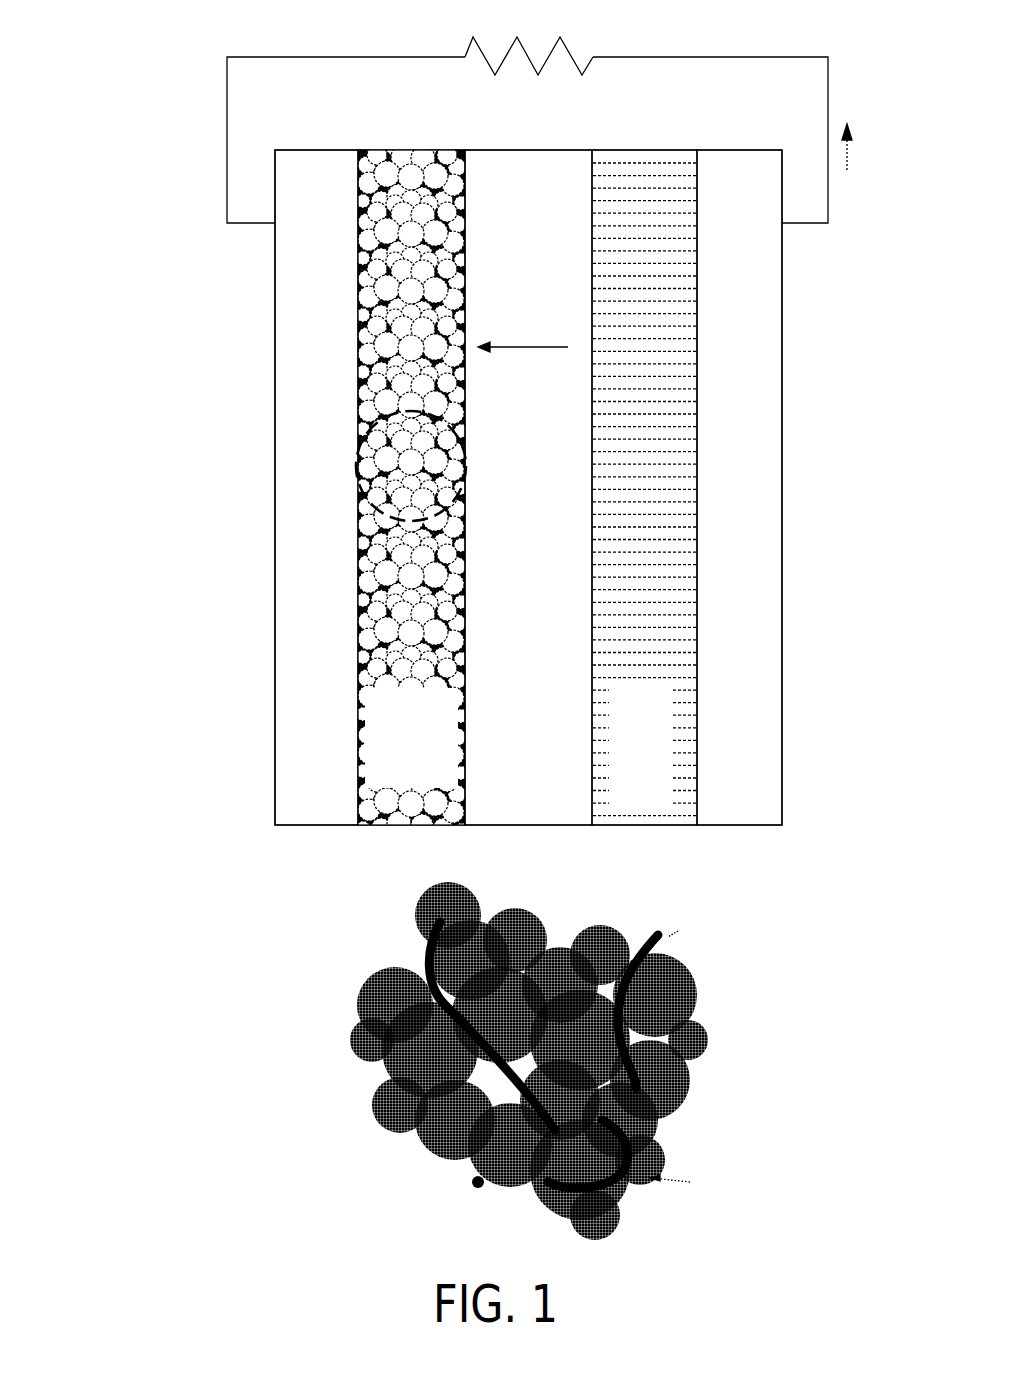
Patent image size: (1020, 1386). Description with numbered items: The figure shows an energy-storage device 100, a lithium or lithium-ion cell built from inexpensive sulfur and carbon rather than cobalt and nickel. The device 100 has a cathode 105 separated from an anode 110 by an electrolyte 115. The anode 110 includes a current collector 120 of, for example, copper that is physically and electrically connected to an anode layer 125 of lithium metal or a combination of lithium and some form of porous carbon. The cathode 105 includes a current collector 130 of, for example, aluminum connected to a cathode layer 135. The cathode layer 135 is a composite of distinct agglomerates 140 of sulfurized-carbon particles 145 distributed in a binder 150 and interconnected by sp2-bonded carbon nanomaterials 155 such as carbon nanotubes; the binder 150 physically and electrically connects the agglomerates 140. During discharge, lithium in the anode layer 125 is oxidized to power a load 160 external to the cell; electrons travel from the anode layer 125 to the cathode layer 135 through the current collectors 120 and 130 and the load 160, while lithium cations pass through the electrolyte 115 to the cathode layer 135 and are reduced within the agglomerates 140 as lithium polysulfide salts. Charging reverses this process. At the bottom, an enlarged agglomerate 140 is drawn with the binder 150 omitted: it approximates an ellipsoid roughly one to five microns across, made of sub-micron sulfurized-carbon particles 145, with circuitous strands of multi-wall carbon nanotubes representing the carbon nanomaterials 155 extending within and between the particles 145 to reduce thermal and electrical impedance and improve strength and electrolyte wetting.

The energy-storage device 100 is at (152, 34).
The cathode 105 is at (465, 148).
The anode 110 is at (782, 148).
The electrolyte 115 is at (545, 272).
The current collector 120 is at (756, 814).
The anode layer 125 is at (657, 812).
The current collector 130 is at (333, 814).
The cathode layer 135 is at (428, 781).
The agglomerate 140 is at (355, 463).
The sulfurized-carbon particle 145 is at (470, 467).
The binder 150 is at (358, 508).
The carbon nanomaterials 155 is at (464, 448).
The load 160 is at (562, 40).